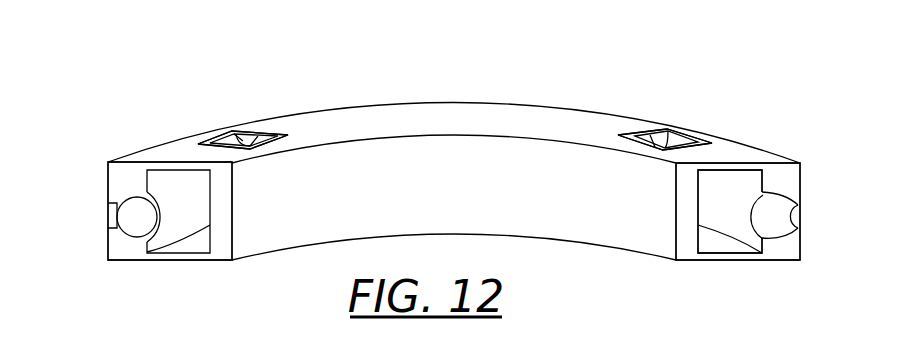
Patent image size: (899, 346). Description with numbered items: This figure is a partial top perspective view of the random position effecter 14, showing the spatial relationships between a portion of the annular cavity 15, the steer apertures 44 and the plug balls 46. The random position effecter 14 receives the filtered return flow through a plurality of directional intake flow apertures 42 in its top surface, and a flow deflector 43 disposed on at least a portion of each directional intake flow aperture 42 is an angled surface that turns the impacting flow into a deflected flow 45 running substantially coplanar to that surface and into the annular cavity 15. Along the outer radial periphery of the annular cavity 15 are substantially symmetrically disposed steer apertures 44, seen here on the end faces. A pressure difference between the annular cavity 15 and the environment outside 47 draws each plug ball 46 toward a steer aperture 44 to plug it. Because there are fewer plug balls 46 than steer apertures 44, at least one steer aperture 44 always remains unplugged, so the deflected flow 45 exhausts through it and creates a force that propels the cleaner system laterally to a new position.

The random position effecter 14 is at (402, 68).
The annular cavity 15 is at (722, 203).
The directional intake flow apertures 42 is at (233, 140).
The flow deflector 43 is at (250, 135).
The steer apertures 44 is at (113, 209).
The deflected flow 45 is at (177, 194).
The plug balls 46 is at (116, 214).
The environment outside 47 is at (16, 214).